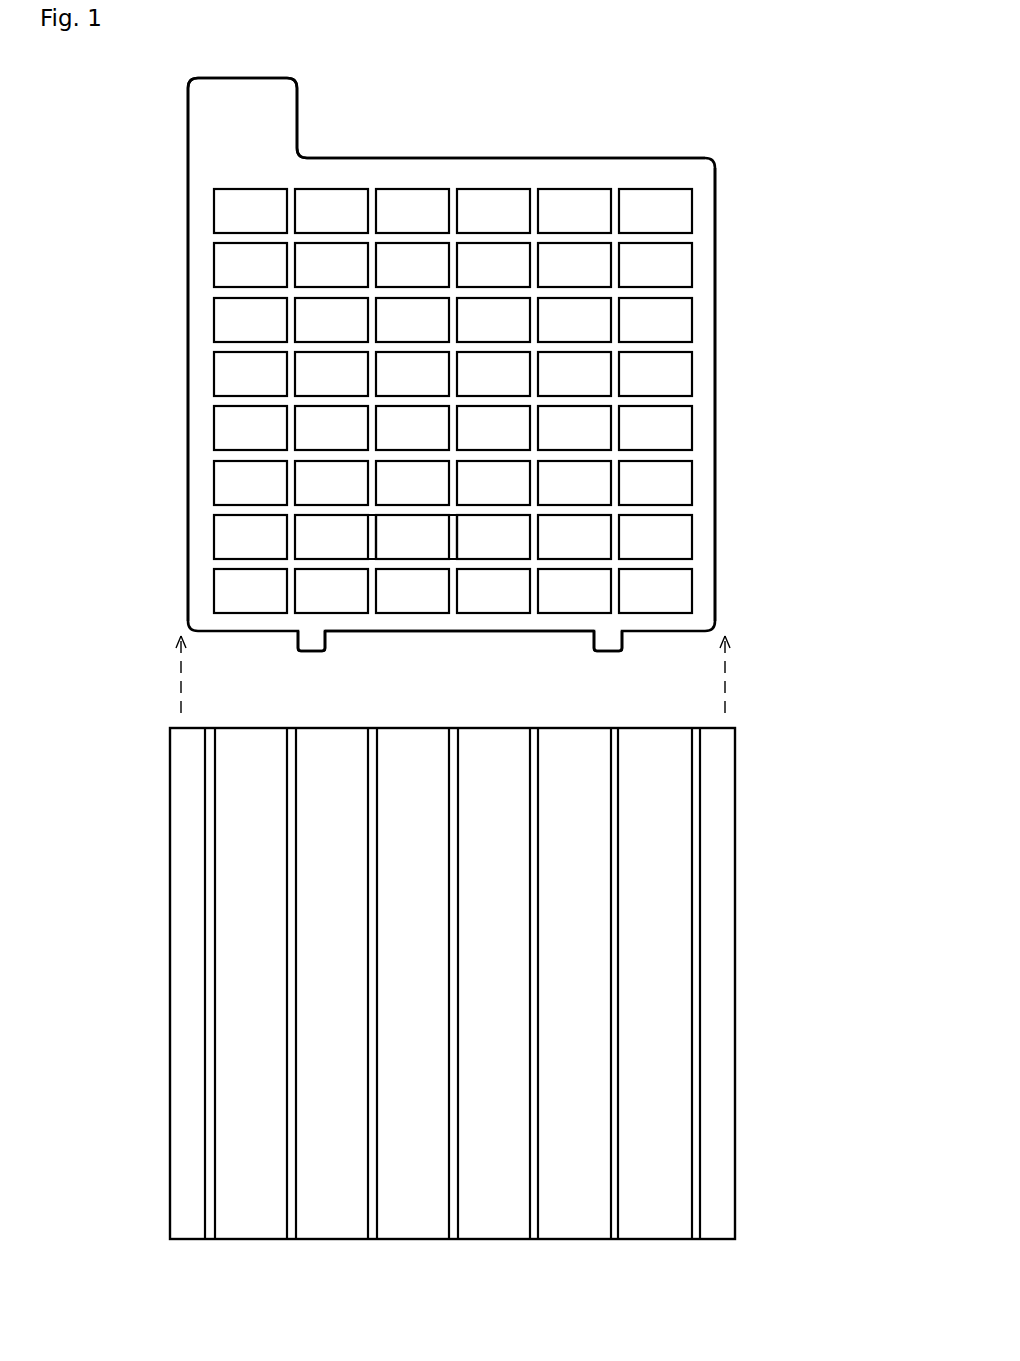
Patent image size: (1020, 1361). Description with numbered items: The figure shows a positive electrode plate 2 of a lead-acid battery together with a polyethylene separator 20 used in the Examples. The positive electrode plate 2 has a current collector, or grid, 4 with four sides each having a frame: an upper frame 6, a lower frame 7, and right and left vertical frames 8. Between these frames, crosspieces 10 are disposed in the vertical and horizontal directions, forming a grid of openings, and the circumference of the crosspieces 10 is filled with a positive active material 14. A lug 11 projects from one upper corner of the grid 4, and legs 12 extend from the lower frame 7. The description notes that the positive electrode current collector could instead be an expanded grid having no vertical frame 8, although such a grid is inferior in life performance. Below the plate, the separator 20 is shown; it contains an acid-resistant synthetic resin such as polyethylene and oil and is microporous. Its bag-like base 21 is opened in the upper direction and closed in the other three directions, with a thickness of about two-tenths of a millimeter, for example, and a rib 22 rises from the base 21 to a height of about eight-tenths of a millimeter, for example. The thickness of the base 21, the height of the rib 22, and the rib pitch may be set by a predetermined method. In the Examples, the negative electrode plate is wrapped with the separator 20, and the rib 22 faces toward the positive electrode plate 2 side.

The positive electrode plate 2 is at (458, 391).
The current collector (grid) 4 is at (549, 152).
The upper frame 6 is at (435, 168).
The lower frame 7 is at (401, 622).
The vertical frame 8 is at (200, 402).
The crosspiece 10 is at (378, 527).
The lug 11 is at (280, 118).
The leg 12 is at (311, 648).
The positive active material 14 is at (668, 266).
The separator 20 is at (490, 1017).
The bag-like base 21 is at (188, 882).
The rib 22 is at (210, 1005).